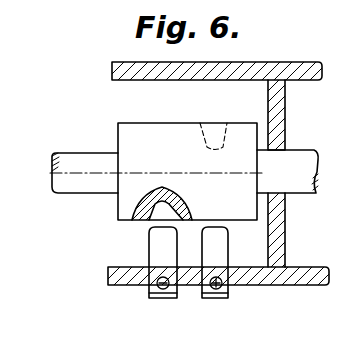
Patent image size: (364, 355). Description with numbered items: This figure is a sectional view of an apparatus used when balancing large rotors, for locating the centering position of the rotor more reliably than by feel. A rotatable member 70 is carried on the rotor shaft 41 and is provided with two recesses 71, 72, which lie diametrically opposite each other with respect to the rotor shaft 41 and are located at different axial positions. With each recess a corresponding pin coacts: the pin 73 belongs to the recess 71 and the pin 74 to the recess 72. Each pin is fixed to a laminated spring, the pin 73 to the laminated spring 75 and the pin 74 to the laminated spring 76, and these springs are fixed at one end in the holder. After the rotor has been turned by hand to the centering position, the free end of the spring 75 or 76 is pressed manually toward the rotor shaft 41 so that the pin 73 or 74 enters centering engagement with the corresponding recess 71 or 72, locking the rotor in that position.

The rotor shaft 41 is at (98, 173).
The rotatable member 70 is at (131, 132).
The recess 71 is at (157, 215).
The recess 72 is at (219, 127).
The pin 73 is at (155, 289).
The pin 74 is at (223, 288).
The laminated spring 75 is at (165, 276).
The laminated spring 76 is at (218, 279).